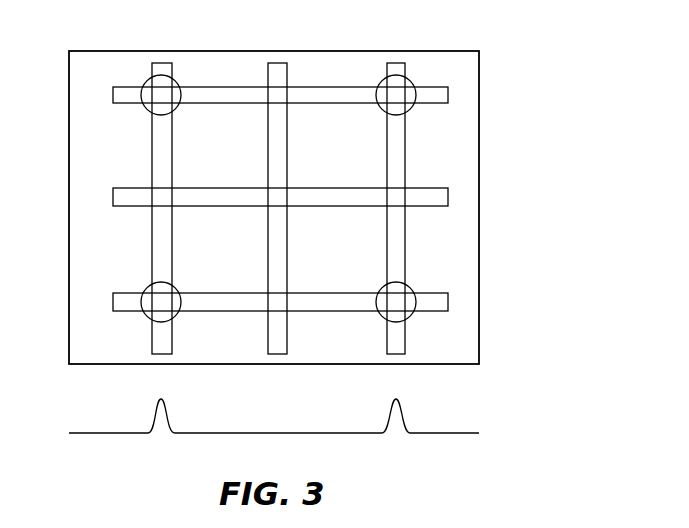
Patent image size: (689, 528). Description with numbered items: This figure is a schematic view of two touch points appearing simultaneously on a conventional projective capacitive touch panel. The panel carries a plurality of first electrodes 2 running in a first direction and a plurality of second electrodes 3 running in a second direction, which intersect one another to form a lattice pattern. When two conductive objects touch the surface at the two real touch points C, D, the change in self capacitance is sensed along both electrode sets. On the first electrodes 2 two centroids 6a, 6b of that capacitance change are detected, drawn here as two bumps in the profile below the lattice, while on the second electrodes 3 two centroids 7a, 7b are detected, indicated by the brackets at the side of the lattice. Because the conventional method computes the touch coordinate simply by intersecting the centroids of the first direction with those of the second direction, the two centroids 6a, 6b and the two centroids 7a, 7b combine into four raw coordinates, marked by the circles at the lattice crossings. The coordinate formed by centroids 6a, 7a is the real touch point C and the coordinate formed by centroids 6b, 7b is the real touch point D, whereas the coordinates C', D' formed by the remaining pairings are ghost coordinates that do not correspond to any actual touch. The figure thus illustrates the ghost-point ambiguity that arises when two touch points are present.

The first electrodes 2 is at (443, 98).
The second electrodes 3 is at (160, 172).
The centroid 7a is at (557, 365).
The centroid 7b is at (557, 286).
The centroid 6a is at (163, 437).
The centroid 6b is at (396, 437).
The touch point C is at (122, 62).
The ghost coordinate C' is at (101, 346).
The touch point D is at (450, 346).
The ghost coordinate D' is at (437, 67).